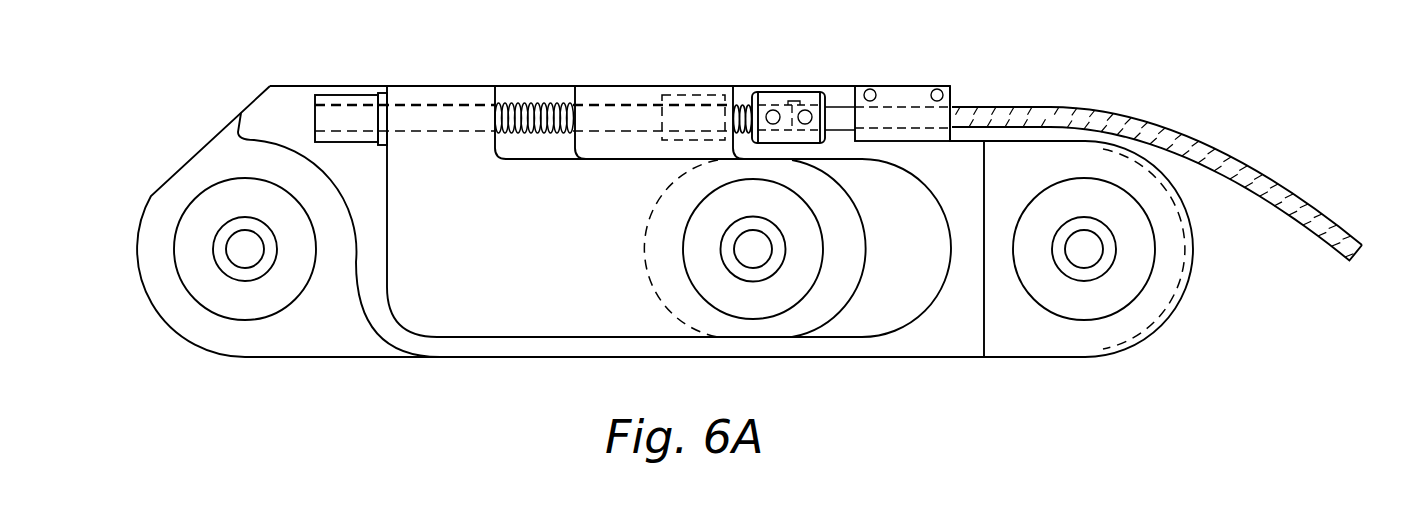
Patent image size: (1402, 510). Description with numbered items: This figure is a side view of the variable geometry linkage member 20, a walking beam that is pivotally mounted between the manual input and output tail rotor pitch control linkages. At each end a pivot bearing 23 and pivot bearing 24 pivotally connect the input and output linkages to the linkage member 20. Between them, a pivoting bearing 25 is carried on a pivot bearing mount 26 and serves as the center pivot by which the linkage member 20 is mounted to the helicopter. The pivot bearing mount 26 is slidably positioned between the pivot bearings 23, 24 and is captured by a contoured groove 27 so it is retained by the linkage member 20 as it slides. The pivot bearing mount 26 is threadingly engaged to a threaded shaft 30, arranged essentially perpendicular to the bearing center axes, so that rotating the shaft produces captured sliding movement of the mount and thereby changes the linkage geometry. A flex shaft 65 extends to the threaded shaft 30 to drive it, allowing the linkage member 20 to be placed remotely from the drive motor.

The variable geometry linkage member 20 is at (365, 358).
The pivot bearing 23 is at (277, 316).
The pivot bearing 24 is at (1067, 317).
The pivoting bearing 25 is at (817, 278).
The pivot bearing mount 26 is at (543, 305).
The contoured groove 27 is at (902, 213).
The threaded shaft 30 is at (530, 104).
The flex shaft 65 is at (1146, 123).